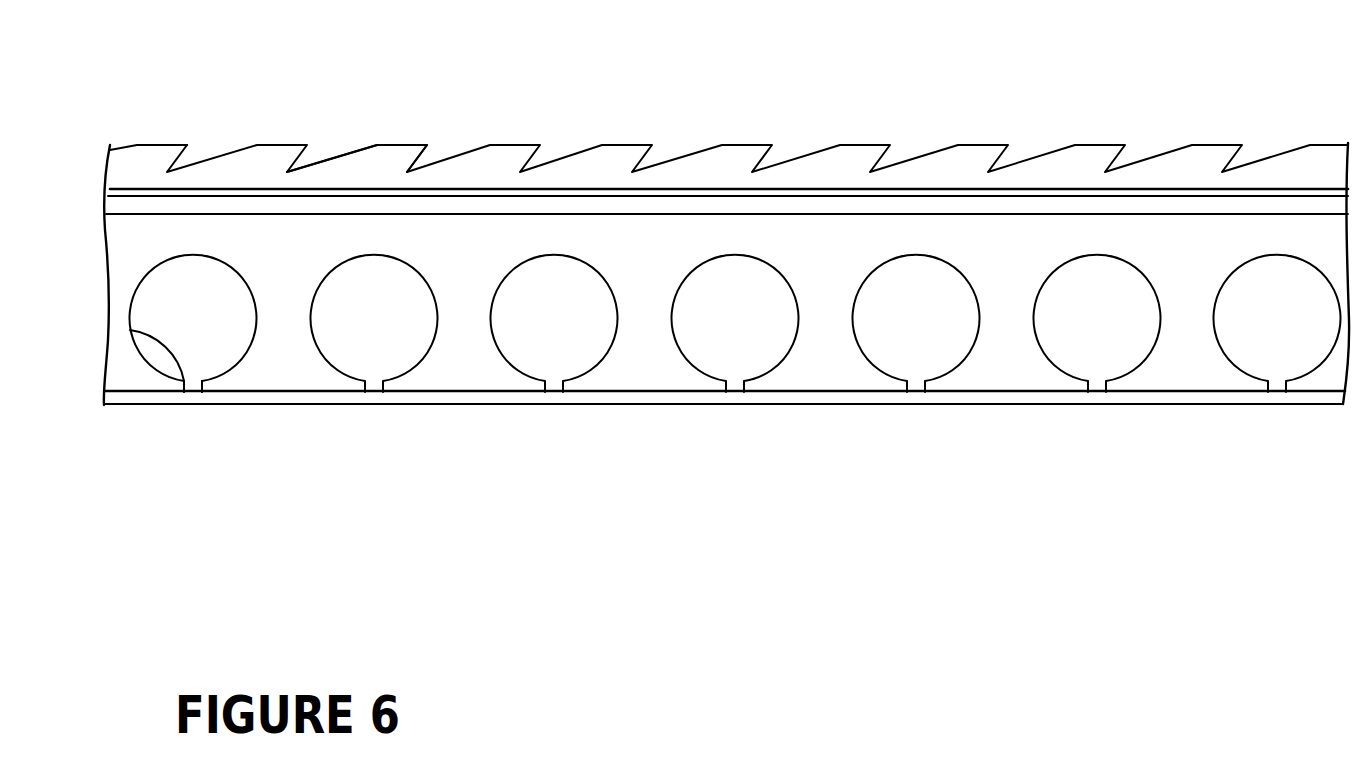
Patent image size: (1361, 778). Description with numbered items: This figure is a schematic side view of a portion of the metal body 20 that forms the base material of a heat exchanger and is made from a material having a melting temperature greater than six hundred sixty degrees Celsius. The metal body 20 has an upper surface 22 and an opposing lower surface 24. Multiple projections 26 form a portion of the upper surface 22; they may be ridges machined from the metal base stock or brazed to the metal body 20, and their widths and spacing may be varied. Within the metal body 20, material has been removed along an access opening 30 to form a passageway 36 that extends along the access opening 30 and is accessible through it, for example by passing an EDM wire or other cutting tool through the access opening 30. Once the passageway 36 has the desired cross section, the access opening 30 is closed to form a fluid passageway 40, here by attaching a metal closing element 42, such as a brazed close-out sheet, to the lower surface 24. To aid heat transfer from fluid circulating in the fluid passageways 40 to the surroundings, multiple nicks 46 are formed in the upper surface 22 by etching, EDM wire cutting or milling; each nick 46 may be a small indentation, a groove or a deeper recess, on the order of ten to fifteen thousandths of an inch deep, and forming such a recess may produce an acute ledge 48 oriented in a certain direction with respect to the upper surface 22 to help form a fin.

The metal body 20 is at (92, 169).
The upper surface 22 is at (148, 145).
The lower surface 24 is at (145, 393).
The projections 26 is at (267, 173).
The access opening 30 is at (184, 392).
The passageway 36 is at (200, 321).
The fluid passageway 40 is at (132, 326).
The metal closing element 42 is at (285, 405).
The nicks 46 is at (462, 148).
The acute ledge 48 is at (430, 148).